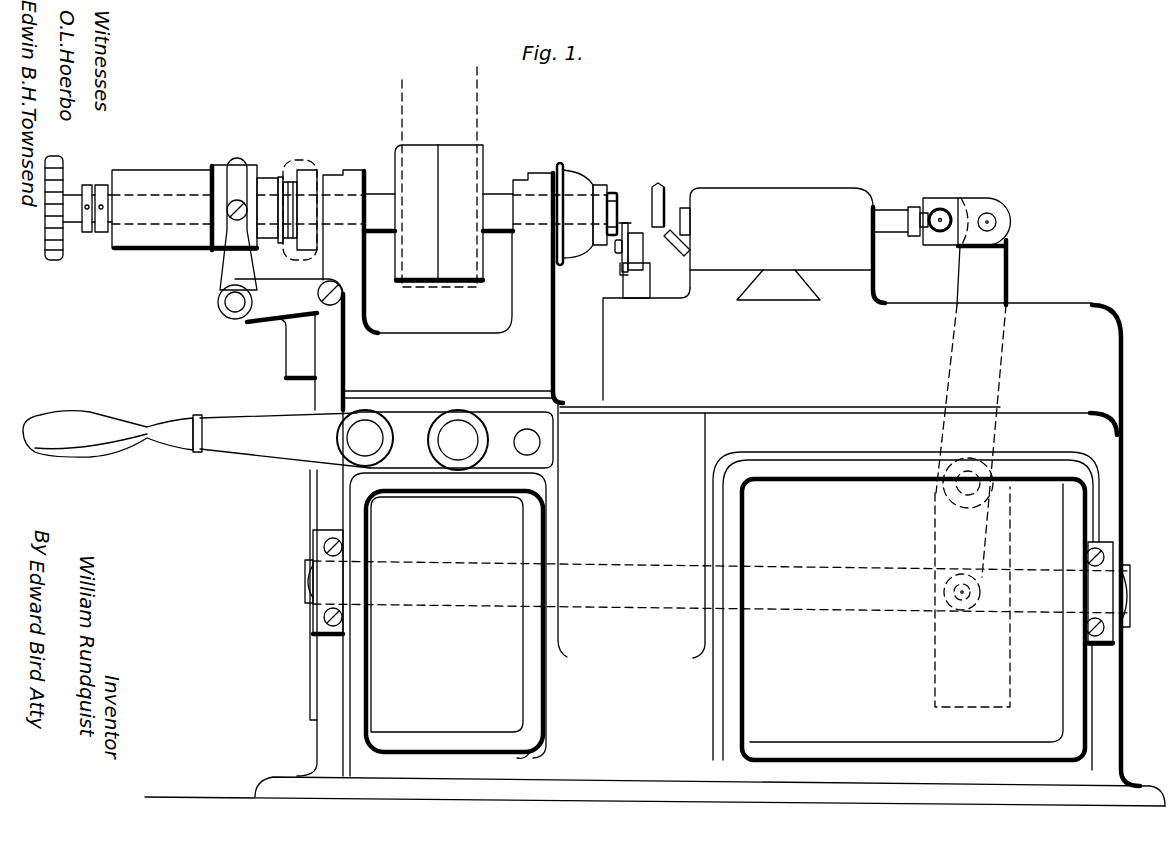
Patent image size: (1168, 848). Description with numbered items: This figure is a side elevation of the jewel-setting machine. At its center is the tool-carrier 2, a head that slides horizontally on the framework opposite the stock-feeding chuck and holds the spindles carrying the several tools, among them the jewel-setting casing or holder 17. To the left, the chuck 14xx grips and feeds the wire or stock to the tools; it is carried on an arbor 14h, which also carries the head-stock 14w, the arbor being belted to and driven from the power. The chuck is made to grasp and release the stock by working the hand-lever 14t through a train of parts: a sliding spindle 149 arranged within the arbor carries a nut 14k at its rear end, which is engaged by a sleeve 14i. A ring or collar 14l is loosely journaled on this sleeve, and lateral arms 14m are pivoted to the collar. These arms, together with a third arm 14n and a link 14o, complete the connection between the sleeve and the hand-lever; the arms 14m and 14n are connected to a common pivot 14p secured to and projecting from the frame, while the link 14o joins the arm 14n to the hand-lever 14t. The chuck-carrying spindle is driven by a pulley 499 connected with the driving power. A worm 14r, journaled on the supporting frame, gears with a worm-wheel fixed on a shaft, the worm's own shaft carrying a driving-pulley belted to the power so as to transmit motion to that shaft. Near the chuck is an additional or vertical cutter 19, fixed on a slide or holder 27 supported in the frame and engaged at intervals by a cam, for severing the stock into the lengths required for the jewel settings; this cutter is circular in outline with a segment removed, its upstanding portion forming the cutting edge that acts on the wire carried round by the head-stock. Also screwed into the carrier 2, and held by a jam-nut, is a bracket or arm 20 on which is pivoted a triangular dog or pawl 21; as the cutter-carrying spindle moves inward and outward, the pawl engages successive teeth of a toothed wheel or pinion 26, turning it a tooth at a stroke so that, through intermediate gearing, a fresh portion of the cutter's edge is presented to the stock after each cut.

The pulley 499 is at (45, 240).
The sliding spindle 149 is at (70, 192).
The nut 14k is at (90, 233).
The arbor 14h is at (100, 183).
The sleeve 14i is at (162, 209).
The ring or collar 14l is at (222, 165).
The lateral arms 14m is at (228, 262).
The common pivot 14p is at (218, 304).
The third arm 14n is at (280, 305).
The link 14o is at (333, 353).
The worm 14r is at (440, 155).
The head-stock 14w is at (578, 188).
The chuck 14xx is at (612, 190).
The additional or vertical cutter 19 is at (622, 268).
The slide or holder 27 is at (633, 288).
The bracket or arm 20 is at (688, 240).
The jewel-setting casing or holder 17 is at (656, 187).
The toothed wheel or pinion 26 is at (684, 208).
The tool-carrier 2 is at (871, 487).
The dog or pawl 21 is at (993, 275).
The hand-lever 14t is at (92, 418).